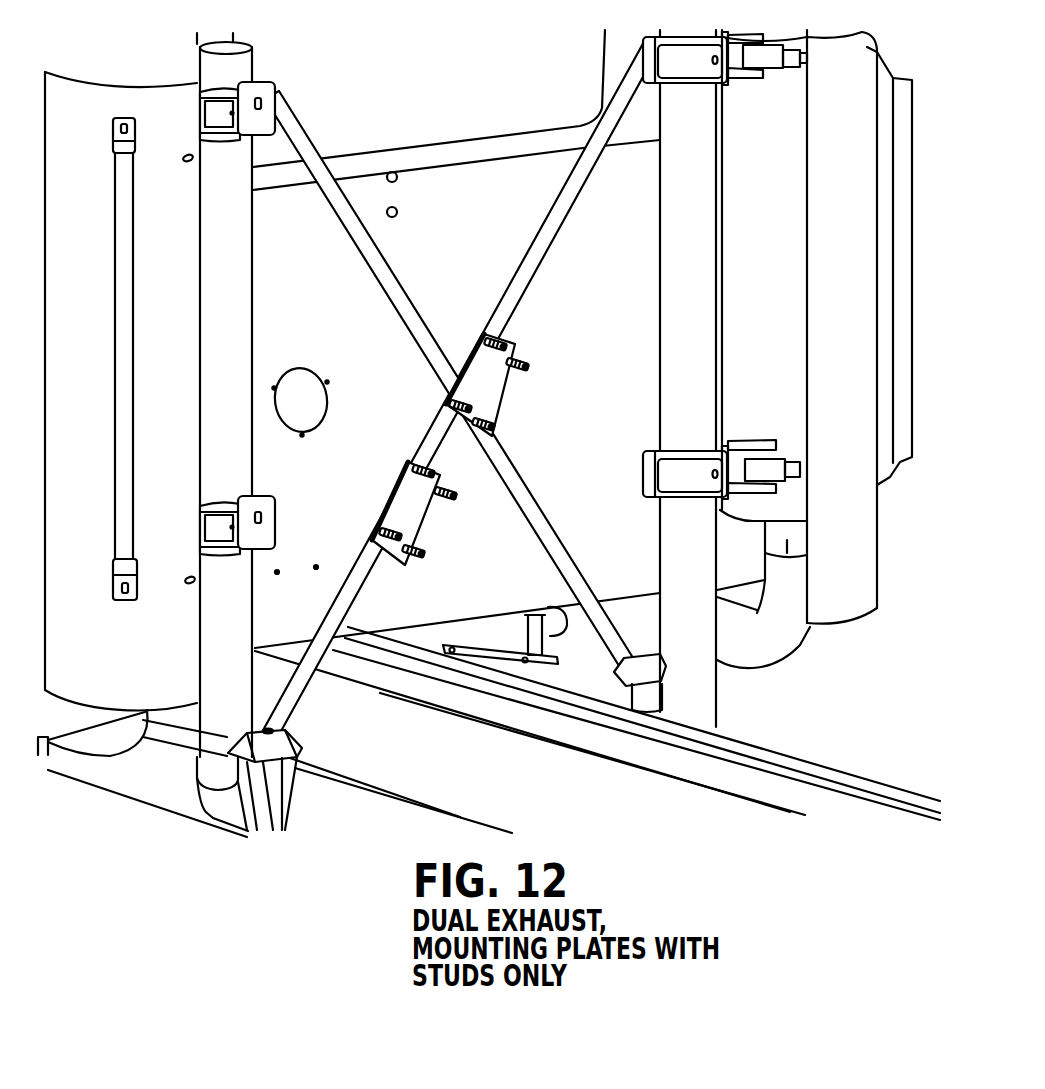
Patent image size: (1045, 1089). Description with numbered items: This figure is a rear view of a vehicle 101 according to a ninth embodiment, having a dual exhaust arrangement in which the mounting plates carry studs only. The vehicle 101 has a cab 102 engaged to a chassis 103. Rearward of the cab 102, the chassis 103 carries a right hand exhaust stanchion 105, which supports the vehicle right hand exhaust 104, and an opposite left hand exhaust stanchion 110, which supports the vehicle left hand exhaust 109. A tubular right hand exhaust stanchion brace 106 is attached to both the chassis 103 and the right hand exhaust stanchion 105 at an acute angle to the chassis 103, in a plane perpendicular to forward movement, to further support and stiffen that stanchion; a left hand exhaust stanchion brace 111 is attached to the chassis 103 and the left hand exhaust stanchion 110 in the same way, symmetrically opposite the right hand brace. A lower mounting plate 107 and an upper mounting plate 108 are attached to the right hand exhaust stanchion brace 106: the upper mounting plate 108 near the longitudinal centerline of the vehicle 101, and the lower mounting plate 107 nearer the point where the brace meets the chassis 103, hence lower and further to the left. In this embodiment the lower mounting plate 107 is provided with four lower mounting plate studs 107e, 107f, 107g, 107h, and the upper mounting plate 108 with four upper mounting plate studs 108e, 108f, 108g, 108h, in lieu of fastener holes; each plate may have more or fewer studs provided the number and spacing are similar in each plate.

The vehicle 101 is at (496, 188).
The cab 102 is at (456, 206).
The chassis 103 is at (588, 731).
The vehicle right hand exhaust 104 is at (765, 242).
The right hand exhaust stanchion 105 is at (660, 297).
The right hand exhaust stanchion brace 106 is at (510, 291).
The lower mounting plate 107 is at (409, 505).
The lower mounting plate stud 107e is at (434, 476).
The lower mounting plate stud 107f is at (458, 498).
The lower mounting plate stud 107g is at (427, 558).
The lower mounting plate stud 107h is at (392, 548).
The upper mounting plate 108 is at (486, 383).
The upper mounting plate stud 108e is at (512, 343).
The upper mounting plate stud 108f is at (530, 365).
The upper mounting plate stud 108g is at (476, 408).
The upper mounting plate stud 108h is at (497, 428).
The vehicle left hand exhaust 109 is at (202, 310).
The left hand exhaust stanchion 110 is at (219, 462).
The left hand exhaust stanchion brace 111 is at (415, 341).